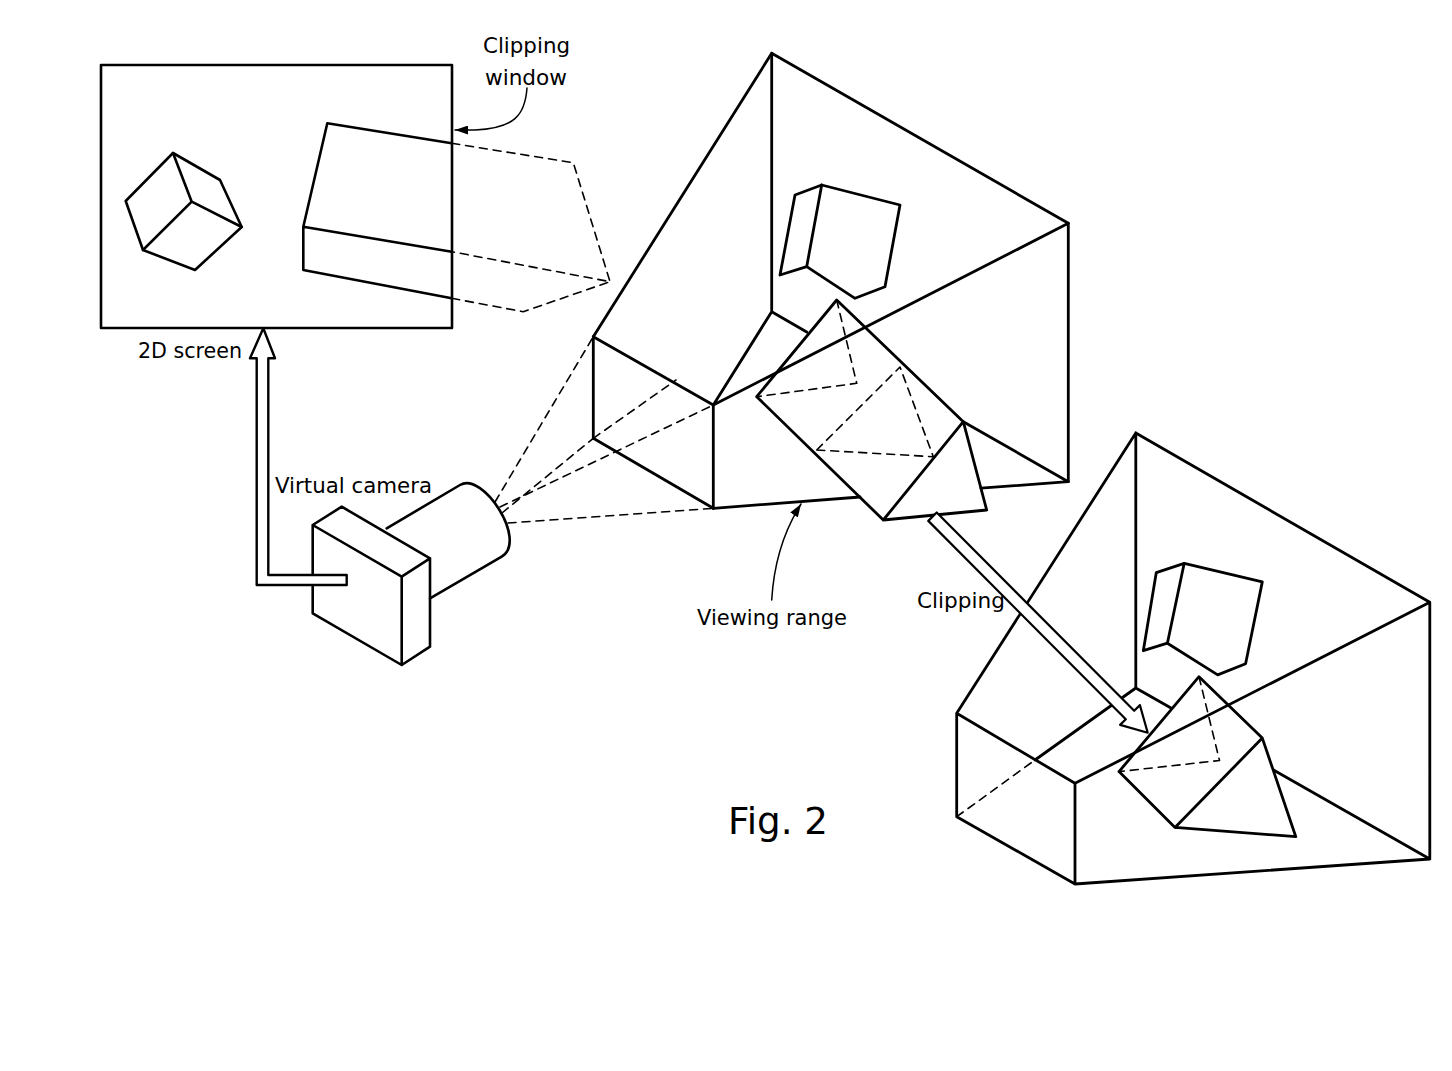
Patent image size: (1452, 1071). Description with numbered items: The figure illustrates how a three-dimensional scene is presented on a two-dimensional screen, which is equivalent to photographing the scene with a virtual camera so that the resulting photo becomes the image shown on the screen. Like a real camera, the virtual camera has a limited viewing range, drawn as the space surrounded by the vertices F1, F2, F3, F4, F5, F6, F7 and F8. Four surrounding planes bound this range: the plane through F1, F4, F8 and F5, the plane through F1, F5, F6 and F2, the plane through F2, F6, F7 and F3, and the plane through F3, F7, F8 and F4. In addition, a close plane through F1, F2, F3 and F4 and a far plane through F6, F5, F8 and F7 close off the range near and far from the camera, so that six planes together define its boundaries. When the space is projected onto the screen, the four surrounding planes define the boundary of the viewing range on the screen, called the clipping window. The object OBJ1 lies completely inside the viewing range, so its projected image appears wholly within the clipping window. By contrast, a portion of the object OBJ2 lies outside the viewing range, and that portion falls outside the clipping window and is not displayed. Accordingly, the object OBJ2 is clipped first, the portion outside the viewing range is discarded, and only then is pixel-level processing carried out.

The vertex F1 is at (728, 456).
The vertex F2 is at (637, 377).
The vertex F3 is at (637, 444).
The vertex F4 is at (786, 517).
The vertex F5 is at (908, 352).
The vertex F6 is at (830, 193).
The vertex F7 is at (759, 229).
The vertex F8 is at (1015, 455).
The object OBJ1 is at (853, 232).
The object OBJ2 is at (880, 347).